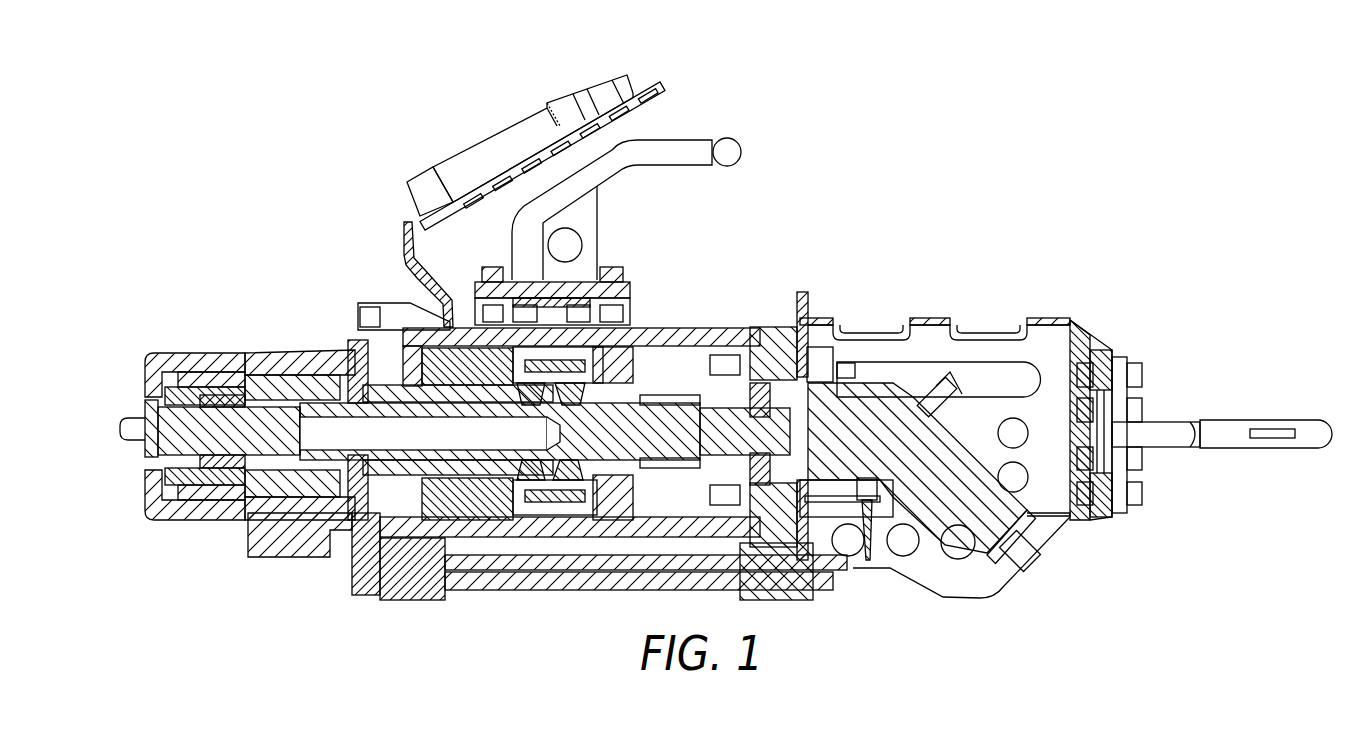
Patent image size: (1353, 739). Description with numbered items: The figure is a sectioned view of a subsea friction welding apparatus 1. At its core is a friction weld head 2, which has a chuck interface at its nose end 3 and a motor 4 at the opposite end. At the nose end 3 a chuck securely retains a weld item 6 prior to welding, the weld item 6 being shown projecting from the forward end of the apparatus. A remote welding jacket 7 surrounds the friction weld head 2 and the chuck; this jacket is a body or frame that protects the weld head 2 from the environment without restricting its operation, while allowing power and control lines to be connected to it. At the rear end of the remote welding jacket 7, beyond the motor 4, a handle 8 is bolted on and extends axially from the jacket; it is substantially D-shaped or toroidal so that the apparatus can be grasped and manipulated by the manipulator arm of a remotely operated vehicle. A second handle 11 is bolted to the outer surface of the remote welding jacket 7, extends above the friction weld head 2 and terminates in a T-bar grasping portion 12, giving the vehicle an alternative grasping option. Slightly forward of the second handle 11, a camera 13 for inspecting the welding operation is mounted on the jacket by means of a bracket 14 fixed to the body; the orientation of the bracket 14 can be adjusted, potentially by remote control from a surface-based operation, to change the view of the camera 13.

The subsea friction welding apparatus 1 is at (876, 166).
The friction weld head 2 is at (686, 327).
The nose end 3 is at (316, 357).
The motor 4 is at (933, 532).
The weld item 6 is at (120, 436).
The remote welding jacket 7 is at (1040, 320).
The handle 8 is at (1225, 450).
The second handle 11 is at (594, 188).
The T-bar grasping portion 12 is at (725, 139).
The camera 13 is at (510, 127).
The bracket 14 is at (632, 107).